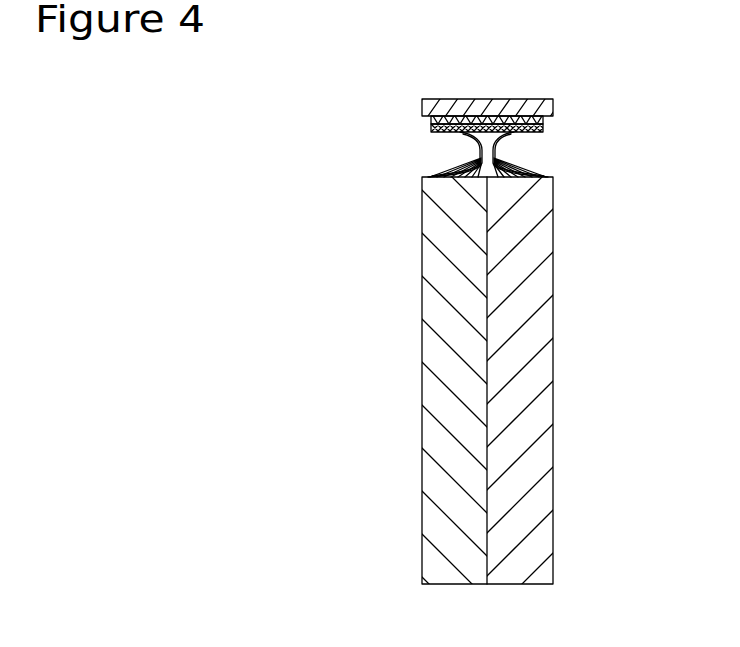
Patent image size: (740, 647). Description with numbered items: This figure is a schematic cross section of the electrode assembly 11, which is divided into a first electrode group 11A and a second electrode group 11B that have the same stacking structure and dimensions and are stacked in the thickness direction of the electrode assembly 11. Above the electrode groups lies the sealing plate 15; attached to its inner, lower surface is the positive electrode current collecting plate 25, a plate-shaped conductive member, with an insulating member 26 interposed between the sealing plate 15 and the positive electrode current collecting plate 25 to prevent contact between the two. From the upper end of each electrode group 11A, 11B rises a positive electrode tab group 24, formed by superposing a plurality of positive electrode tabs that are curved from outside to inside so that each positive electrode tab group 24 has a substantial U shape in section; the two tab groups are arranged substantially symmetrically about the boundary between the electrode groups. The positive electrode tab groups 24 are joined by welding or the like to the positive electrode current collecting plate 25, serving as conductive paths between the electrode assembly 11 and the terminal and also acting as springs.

The electrode assembly 11 is at (490, 394).
The first electrode group 11A is at (438, 345).
The second electrode group 11B is at (540, 330).
The sealing plate 15 is at (530, 103).
The positive electrode tab group 24 is at (458, 136).
The positive electrode current collecting plate 25 is at (540, 128).
The insulating member 26 is at (543, 121).